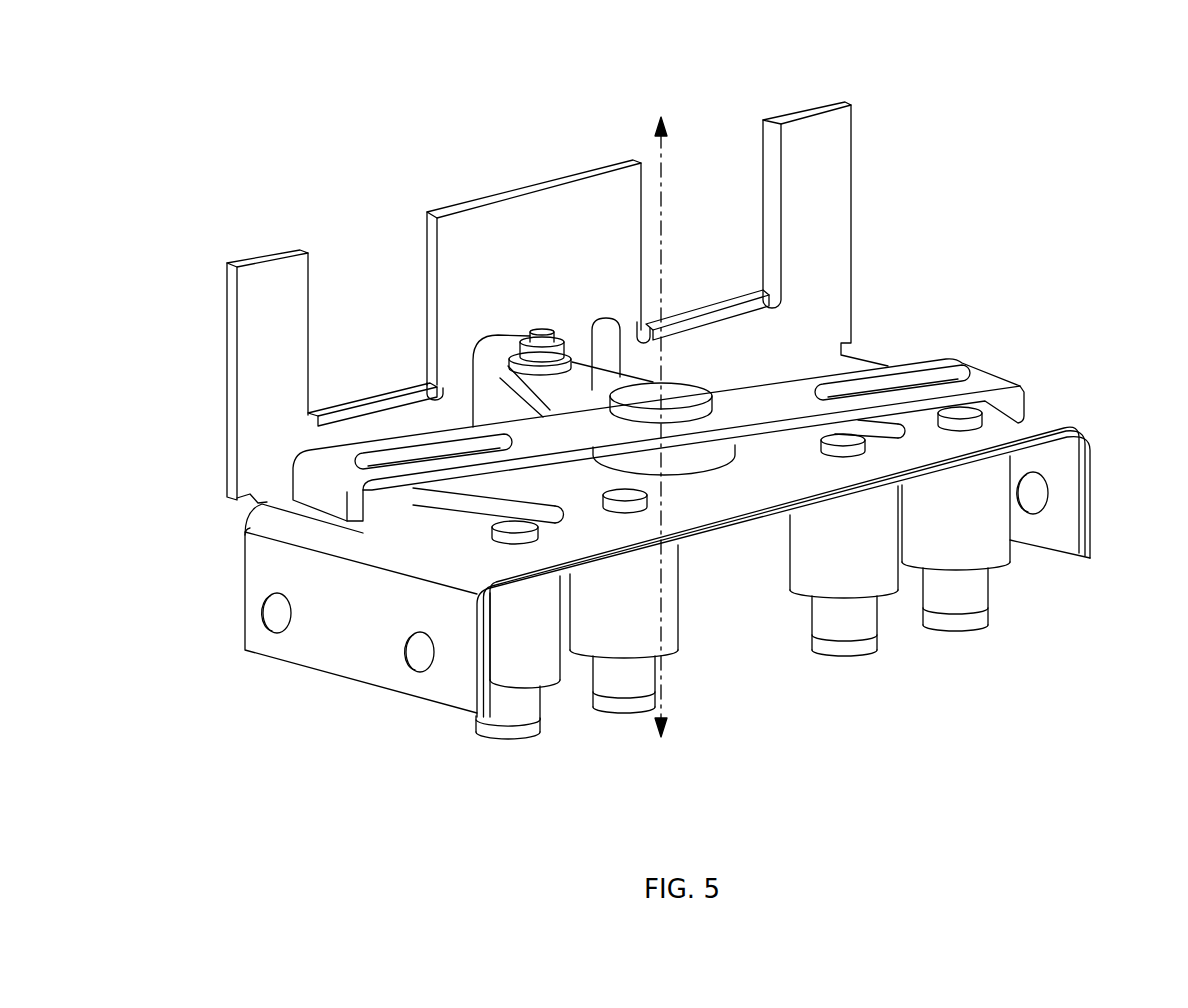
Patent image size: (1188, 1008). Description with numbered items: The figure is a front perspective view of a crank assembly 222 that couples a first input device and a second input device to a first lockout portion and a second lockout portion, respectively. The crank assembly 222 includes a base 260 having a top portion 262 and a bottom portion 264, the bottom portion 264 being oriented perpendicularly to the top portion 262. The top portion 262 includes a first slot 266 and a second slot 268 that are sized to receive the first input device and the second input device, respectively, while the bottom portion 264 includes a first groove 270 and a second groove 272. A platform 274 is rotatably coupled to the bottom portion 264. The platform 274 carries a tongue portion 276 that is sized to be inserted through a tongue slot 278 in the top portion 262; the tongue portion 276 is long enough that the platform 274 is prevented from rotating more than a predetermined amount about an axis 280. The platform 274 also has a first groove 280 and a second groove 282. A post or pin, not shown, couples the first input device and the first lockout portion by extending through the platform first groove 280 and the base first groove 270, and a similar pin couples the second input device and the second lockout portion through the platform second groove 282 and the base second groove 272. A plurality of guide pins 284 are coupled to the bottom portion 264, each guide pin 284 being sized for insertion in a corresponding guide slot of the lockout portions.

The crank assembly 222 is at (1035, 102).
The base 260 is at (226, 514).
The top portion 262 is at (821, 100).
The bottom portion 264 is at (1098, 550).
The first slot 266 is at (737, 138).
The second slot 268 is at (336, 248).
The first groove 270 is at (882, 434).
The second groove 272 is at (540, 522).
The platform 274 is at (689, 427).
The tongue portion 276 is at (598, 378).
The tongue slot 278 is at (494, 358).
The axis / first groove 280 is at (664, 186).
The second groove 282 is at (400, 457).
The guide pins 284 is at (843, 656).